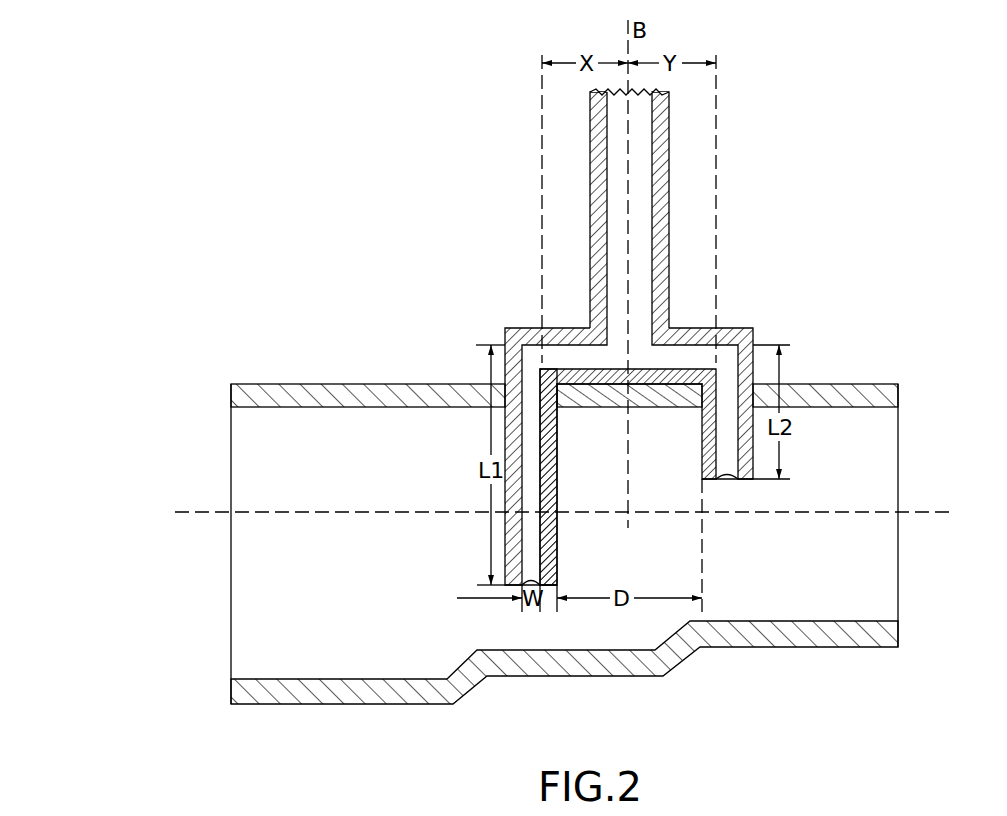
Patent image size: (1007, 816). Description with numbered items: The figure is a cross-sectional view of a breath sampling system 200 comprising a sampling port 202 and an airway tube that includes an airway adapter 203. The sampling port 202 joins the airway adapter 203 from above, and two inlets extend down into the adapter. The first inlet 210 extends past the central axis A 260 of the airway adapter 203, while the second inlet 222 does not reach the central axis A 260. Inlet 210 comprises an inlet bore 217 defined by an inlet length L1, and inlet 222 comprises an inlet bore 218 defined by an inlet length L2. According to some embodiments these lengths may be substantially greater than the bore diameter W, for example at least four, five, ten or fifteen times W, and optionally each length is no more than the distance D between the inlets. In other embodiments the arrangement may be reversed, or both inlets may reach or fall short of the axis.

The breath sampling system 200 is at (686, 328).
The sampling port 202 is at (565, 165).
The airway adapter 203 is at (350, 338).
The inlet 210 is at (505, 435).
The inlet bore 217 is at (538, 487).
The inlet bore 218 is at (727, 452).
The inlet 222 is at (627, 477).
The central axis A 260 is at (950, 498).